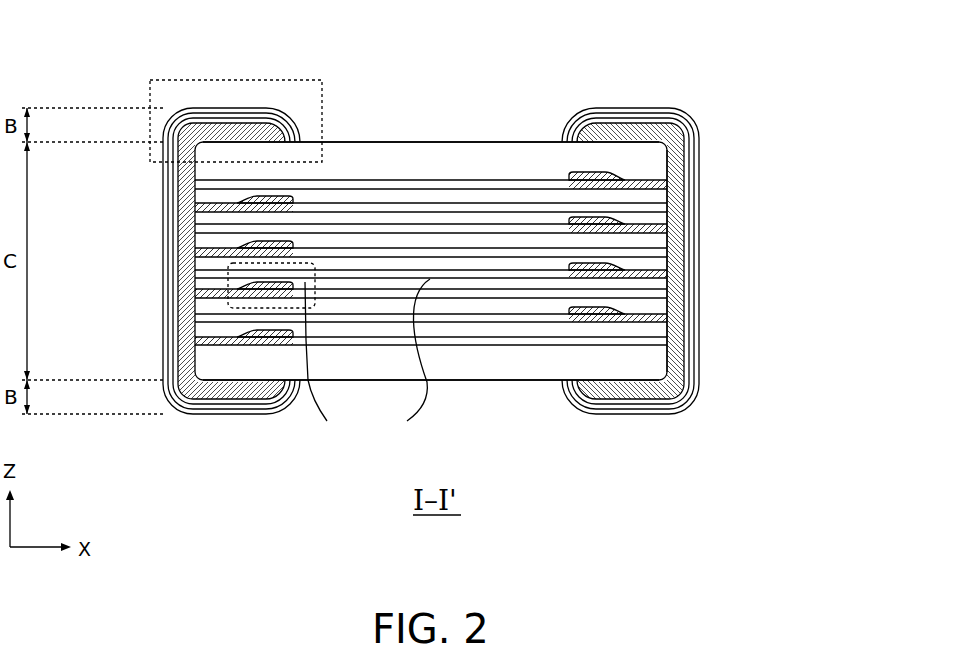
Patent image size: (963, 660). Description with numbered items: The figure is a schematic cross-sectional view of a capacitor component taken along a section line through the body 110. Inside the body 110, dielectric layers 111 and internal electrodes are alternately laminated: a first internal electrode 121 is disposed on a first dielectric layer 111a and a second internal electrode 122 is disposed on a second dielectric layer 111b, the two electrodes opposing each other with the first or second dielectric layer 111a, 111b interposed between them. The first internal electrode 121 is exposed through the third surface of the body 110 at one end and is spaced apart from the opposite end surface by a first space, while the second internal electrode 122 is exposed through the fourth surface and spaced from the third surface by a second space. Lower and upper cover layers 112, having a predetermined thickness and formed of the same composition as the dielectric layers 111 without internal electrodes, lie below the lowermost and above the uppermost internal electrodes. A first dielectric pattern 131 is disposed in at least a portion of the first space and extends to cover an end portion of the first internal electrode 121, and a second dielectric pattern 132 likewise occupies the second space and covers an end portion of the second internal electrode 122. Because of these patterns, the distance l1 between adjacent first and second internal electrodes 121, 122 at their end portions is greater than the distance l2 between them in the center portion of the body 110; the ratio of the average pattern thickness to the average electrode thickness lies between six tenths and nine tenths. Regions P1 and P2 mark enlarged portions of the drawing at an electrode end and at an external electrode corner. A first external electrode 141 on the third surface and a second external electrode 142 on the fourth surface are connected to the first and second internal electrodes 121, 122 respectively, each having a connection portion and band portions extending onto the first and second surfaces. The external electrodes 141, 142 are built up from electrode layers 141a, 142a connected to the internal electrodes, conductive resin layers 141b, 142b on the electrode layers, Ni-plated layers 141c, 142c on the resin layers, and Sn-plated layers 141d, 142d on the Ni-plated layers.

The body 110 is at (378, 141).
The dielectric layers 111 is at (750, 261).
The first dielectric layer 111a is at (686, 188).
The second dielectric layer 111b is at (686, 216).
The cover layers 112 is at (440, 157).
The first internal electrode 121 is at (498, 185).
The second internal electrode 122 is at (528, 210).
The first dielectric pattern 131 is at (672, 181).
The second dielectric pattern 132 is at (200, 205).
The first external electrode 141 is at (170, 261).
The electrode layer 141a is at (186, 261).
The conductive resin layer 141b is at (176, 289).
The Ni-plated layer 141c is at (171, 318).
The Sn-plated layer 141d is at (166, 346).
The second external electrode 142 is at (697, 261).
The electrode layer 142a is at (678, 249).
The conductive resin layer 142b is at (686, 279).
The Ni-plated layer 142c is at (691, 309).
The Sn-plated layer 142d is at (696, 337).
The enlarged region P1 is at (233, 312).
The enlarged region P2 is at (230, 80).
The distance between adjacent internal electrodes at end portions l1 is at (322, 363).
The distance between adjacent internal electrodes in center portion l2 is at (413, 362).